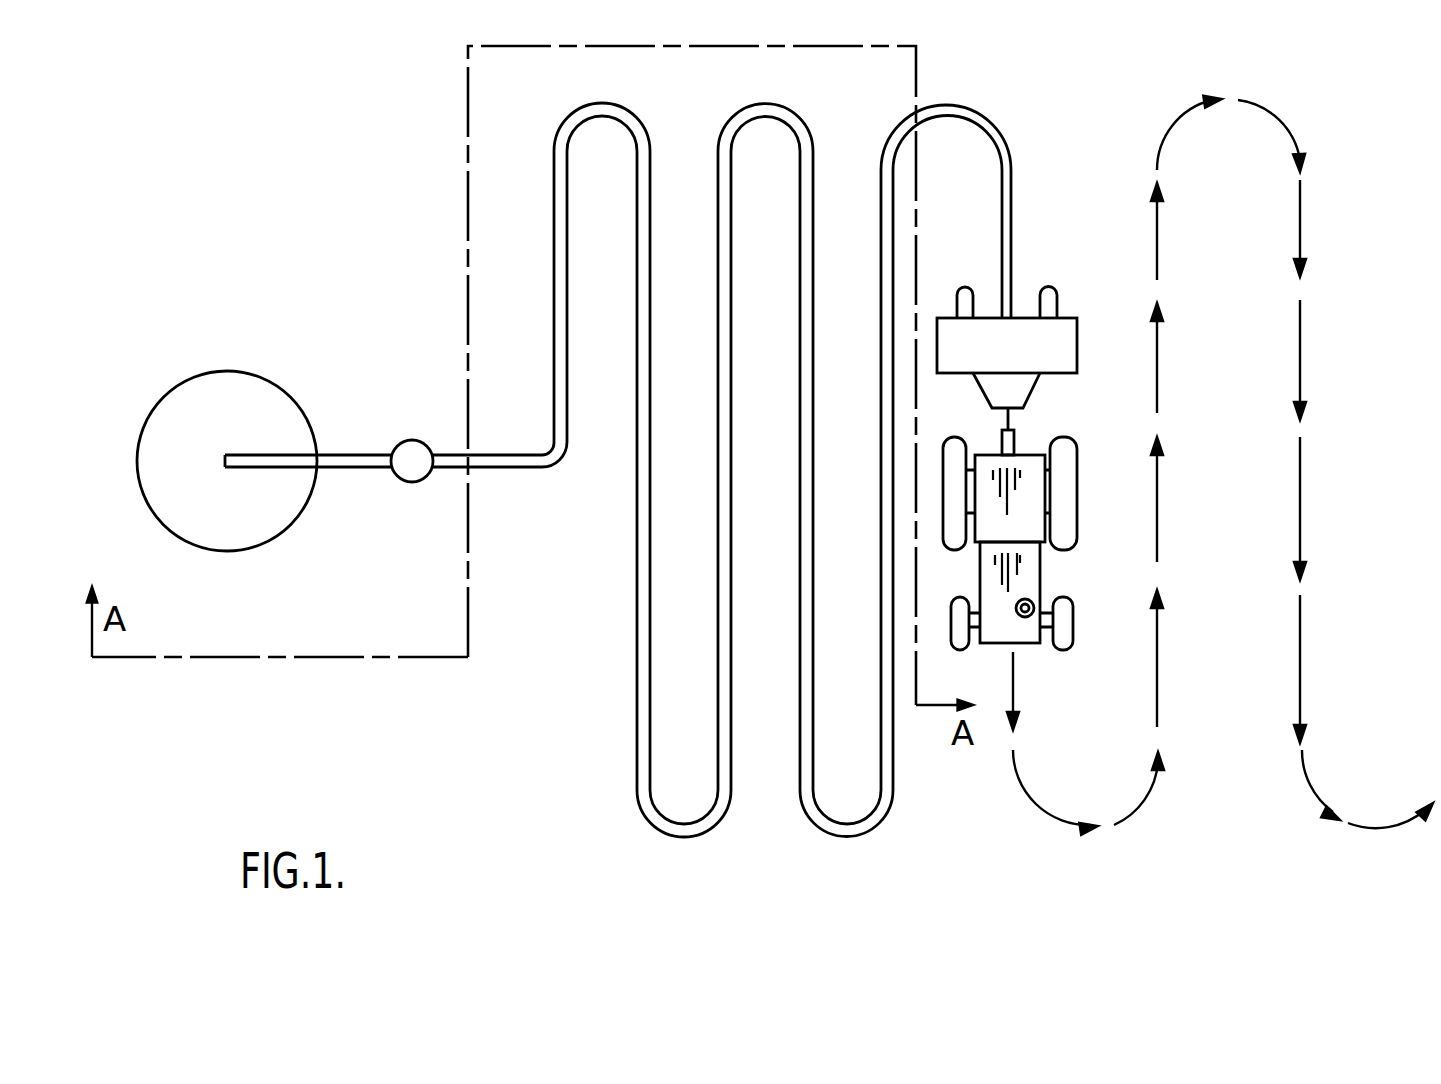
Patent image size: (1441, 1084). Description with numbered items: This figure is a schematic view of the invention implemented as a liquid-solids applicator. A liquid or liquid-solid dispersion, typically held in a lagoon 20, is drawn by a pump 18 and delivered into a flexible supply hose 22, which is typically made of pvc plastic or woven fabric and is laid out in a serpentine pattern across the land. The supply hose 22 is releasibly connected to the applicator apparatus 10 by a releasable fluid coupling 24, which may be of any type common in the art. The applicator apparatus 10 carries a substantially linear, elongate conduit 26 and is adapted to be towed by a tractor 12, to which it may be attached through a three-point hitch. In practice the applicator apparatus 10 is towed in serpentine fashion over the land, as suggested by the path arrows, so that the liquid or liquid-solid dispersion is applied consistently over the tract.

The applicator apparatus 10 is at (1042, 272).
The tractor 12 is at (1027, 582).
The pump 18 is at (412, 440).
The lagoon 20 is at (222, 395).
The flexible supply hose 22 is at (558, 234).
The releasable fluid coupling 24 is at (1003, 225).
The elongate conduit 26 is at (1004, 262).